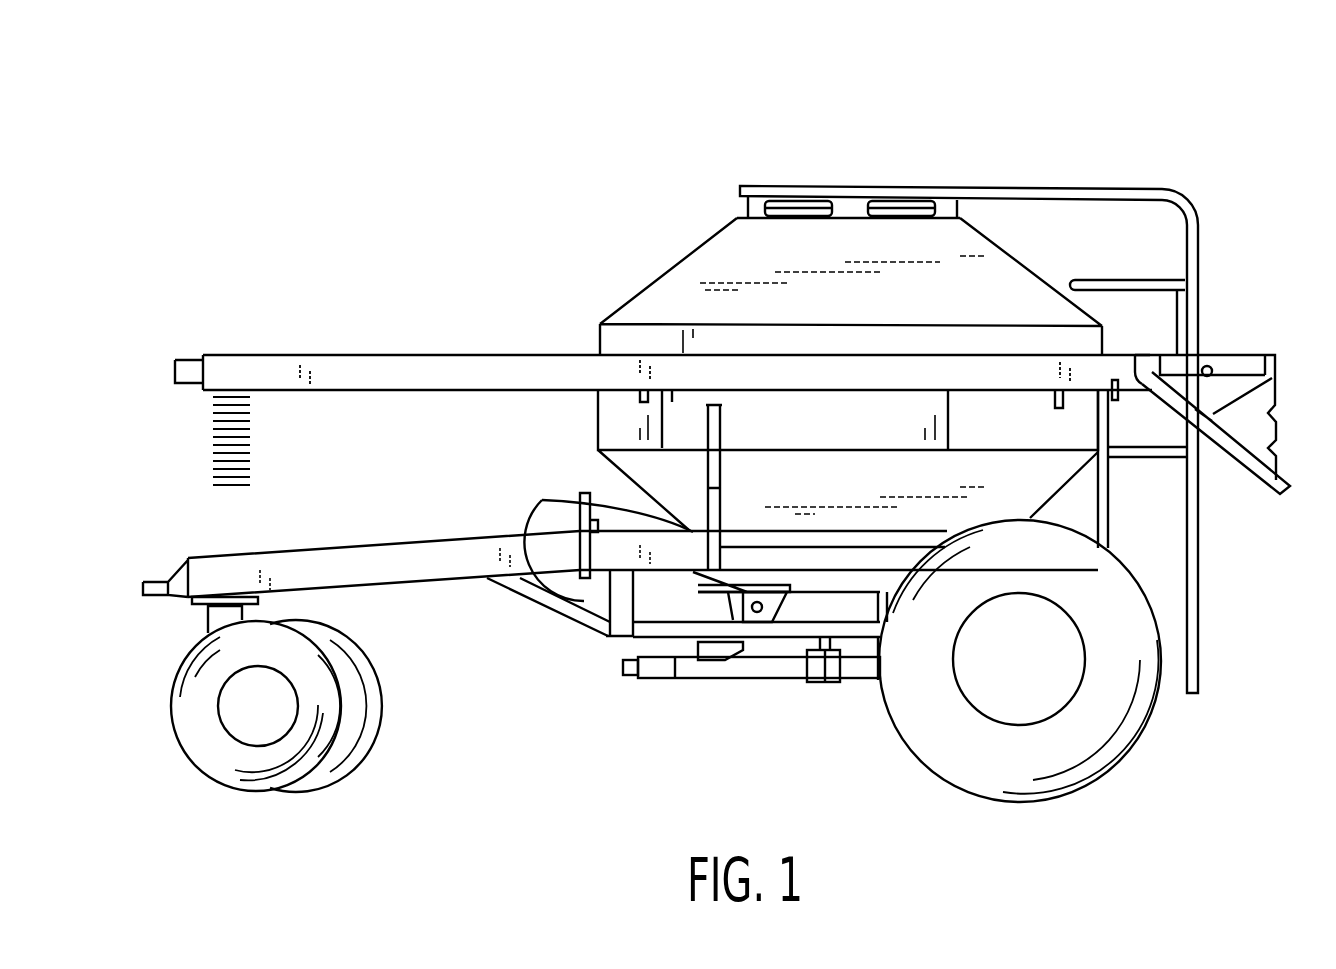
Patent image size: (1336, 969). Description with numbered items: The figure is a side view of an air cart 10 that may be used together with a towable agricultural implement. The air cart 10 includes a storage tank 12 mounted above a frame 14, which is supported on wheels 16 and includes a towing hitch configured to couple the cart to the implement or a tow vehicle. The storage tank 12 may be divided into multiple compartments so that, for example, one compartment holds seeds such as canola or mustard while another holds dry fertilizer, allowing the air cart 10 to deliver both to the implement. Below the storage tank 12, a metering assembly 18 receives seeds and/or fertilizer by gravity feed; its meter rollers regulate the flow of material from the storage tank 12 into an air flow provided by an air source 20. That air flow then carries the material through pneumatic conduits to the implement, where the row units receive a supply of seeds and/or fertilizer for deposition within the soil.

The air cart 10 is at (671, 136).
The storage tank 12 is at (715, 255).
The frame 14 is at (383, 540).
The wheels 16 is at (196, 766).
The metering assembly 18 is at (783, 612).
The air source 20 is at (505, 500).